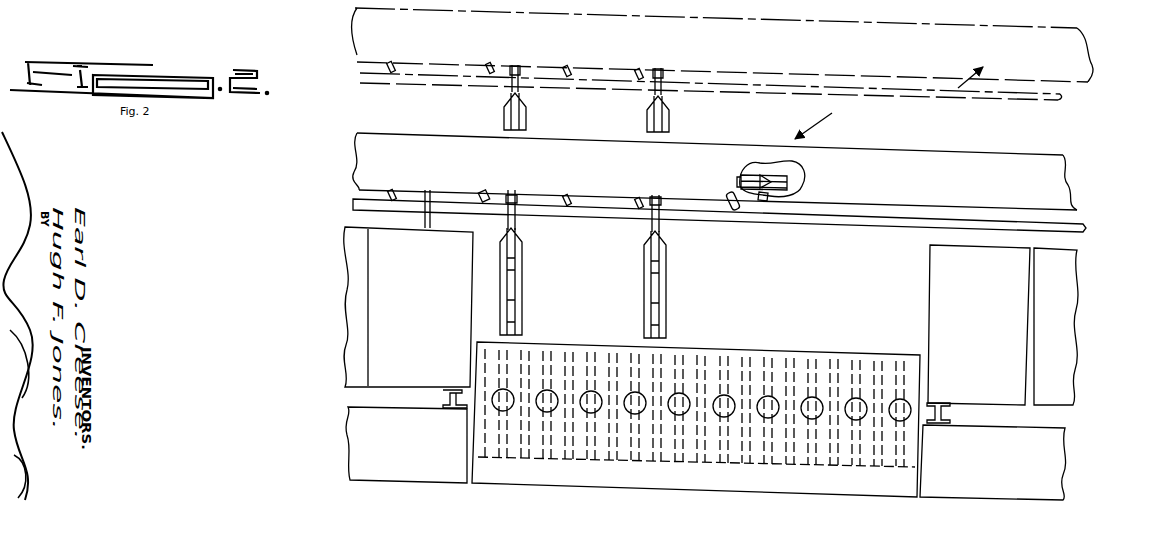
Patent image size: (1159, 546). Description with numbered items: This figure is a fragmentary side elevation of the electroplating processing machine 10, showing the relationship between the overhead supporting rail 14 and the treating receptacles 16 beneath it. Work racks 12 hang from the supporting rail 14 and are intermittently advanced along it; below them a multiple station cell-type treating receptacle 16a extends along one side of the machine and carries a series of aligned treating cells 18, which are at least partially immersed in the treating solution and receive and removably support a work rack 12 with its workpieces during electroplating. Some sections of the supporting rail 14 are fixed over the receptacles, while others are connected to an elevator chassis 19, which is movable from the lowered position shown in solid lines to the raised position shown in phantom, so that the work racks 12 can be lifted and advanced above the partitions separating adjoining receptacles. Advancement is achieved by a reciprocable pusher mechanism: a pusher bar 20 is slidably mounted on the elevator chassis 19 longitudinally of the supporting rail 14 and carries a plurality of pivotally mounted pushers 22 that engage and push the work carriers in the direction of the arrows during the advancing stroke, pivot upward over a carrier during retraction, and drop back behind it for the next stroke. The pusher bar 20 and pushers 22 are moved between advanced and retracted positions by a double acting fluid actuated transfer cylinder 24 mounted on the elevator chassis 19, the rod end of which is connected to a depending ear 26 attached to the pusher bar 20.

The processing machine 10 is at (1083, 181).
The work rack 12 is at (517, 288).
The supporting rail 14 is at (620, 212).
The treating receptacle 16 is at (385, 312).
The multiple station cell-type treating receptacle 16a is at (715, 355).
The treating cell 18 is at (890, 367).
The elevator chassis 19 is at (950, 96).
The pusher bar 20 is at (762, 199).
The pusher 22 is at (487, 195).
The transfer cylinder 24 is at (693, 175).
The depending ear 26 is at (772, 182).